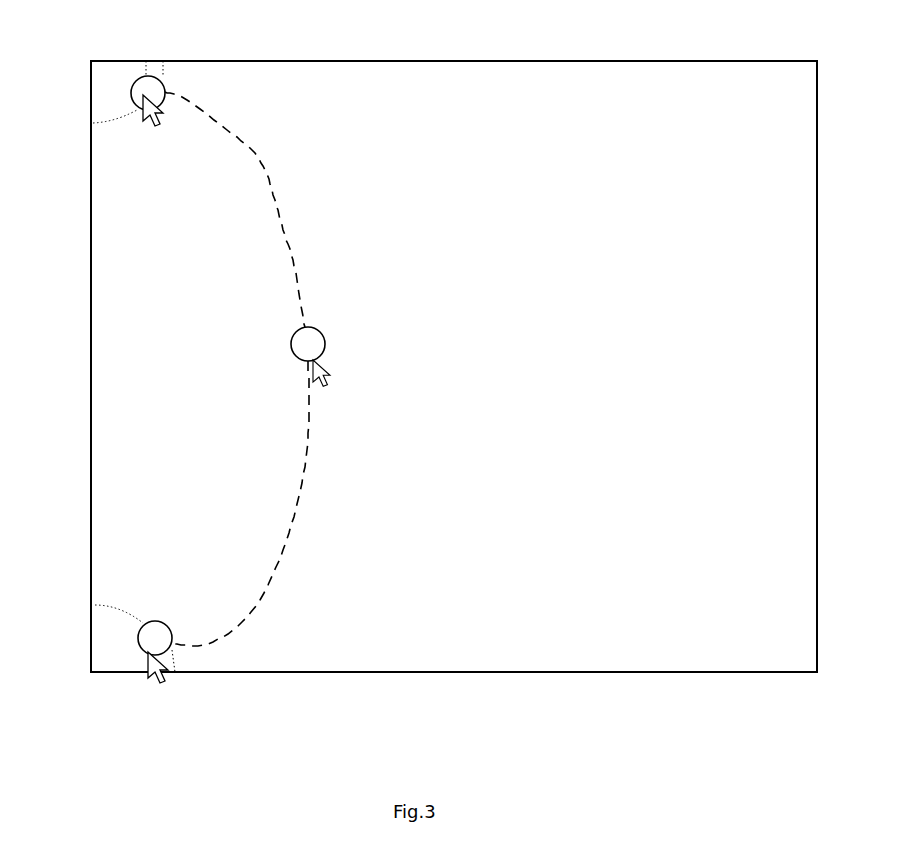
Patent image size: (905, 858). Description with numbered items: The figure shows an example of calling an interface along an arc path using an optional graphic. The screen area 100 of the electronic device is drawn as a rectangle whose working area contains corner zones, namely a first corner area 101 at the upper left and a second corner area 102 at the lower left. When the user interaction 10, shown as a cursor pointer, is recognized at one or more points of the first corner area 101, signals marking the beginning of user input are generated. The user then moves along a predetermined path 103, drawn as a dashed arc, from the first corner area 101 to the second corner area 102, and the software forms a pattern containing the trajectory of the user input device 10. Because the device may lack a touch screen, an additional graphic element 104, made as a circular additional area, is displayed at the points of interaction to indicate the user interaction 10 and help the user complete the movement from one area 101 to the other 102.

The screen area 100 is at (736, 111).
The first corner area 101 is at (108, 78).
The second corner area 102 is at (108, 632).
The predetermined path 103 is at (282, 215).
The additional graphic element 104 is at (147, 62).
The user interaction 10 is at (163, 114).